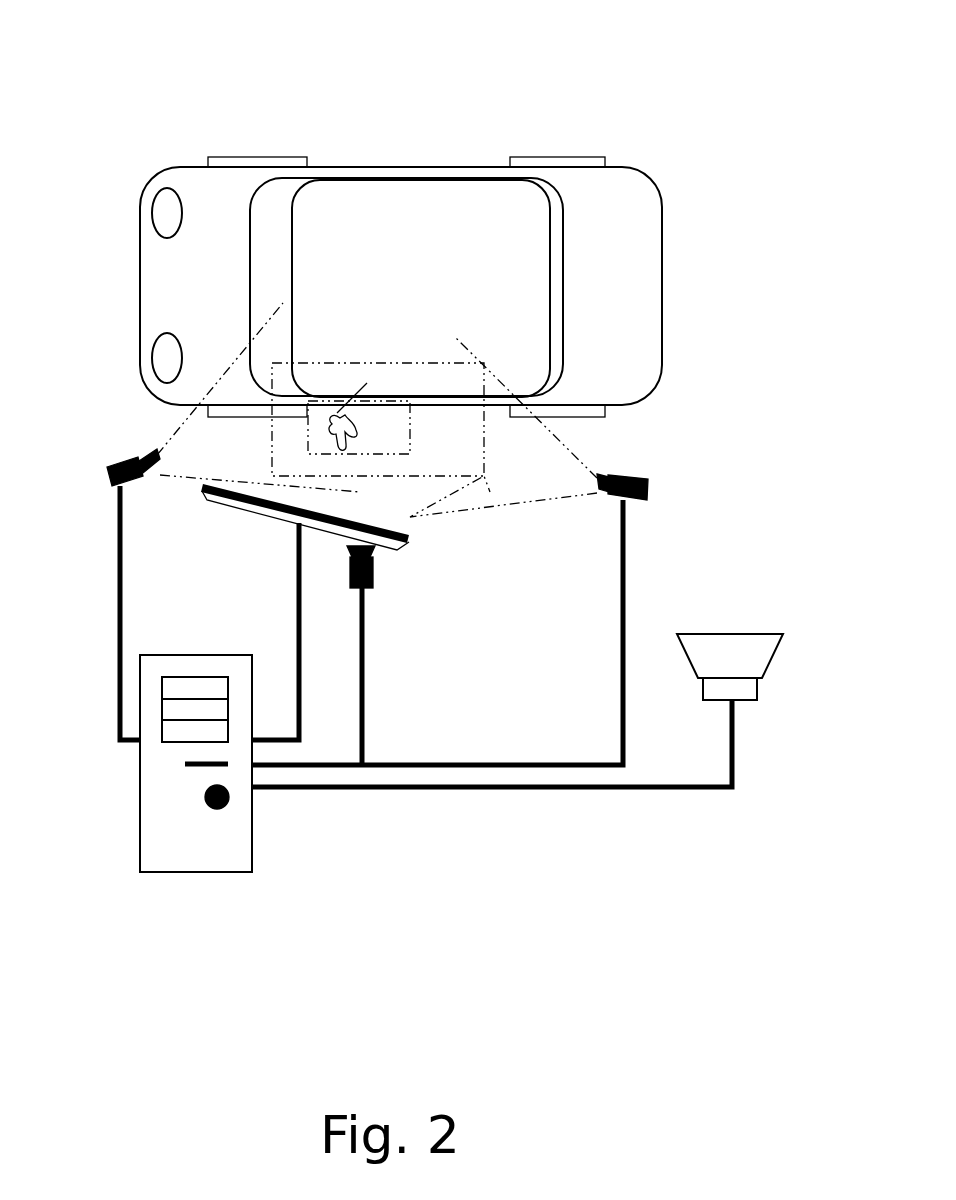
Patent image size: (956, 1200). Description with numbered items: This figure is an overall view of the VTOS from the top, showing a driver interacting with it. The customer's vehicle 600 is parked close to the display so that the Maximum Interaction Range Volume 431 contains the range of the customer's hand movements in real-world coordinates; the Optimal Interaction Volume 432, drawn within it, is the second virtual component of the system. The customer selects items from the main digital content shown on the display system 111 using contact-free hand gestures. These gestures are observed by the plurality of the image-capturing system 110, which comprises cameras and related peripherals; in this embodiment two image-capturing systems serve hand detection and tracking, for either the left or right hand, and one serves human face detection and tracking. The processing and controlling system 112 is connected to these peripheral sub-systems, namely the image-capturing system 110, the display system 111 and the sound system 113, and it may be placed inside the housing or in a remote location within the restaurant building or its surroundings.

The vehicle 600 is at (340, 167).
The Maximum Interaction Range Volume 431 is at (484, 440).
The Optimal Interaction Volume 432 is at (308, 438).
The image-capturing system 110 is at (107, 478).
The display system 111 is at (410, 535).
The processing and controlling system 112 is at (212, 872).
The sound system 113 is at (763, 658).